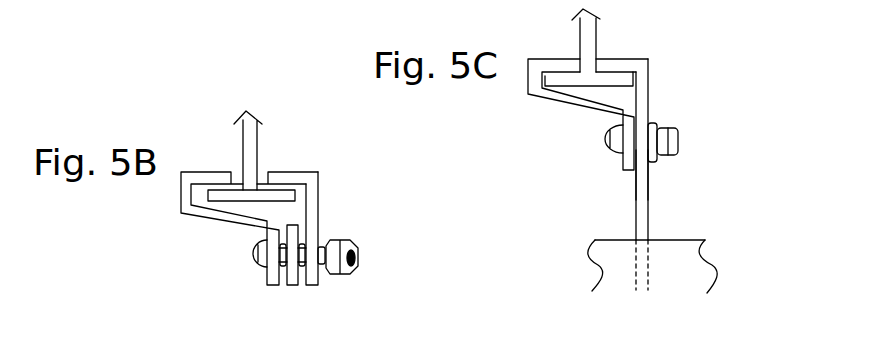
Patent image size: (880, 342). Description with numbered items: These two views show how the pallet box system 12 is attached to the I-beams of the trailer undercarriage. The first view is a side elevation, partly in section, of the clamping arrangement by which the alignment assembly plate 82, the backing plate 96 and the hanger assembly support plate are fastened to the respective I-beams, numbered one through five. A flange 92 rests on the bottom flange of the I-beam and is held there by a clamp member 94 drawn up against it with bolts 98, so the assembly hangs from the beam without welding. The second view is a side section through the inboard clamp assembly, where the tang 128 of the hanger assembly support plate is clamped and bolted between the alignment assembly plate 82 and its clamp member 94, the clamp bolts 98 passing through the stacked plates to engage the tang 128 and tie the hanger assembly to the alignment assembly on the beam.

In FIG. 5B, the clamp member 94 is at (197, 216).
In FIG. 5C, the clamp member 94 is at (565, 103).
In FIG. 5B, the flange 92 is at (296, 178).
In FIG. 5C, the flange 92 is at (645, 63).
In FIG. 5B, the alignment assembly plate 82 is at (319, 207).
In FIG. 5B, the tang 128 is at (294, 276).
In FIG. 5B, the clamp bolts 98 is at (359, 267).
In FIG. 5C, the clamp bolts 98 is at (679, 128).
In FIG. 5C, the backing plate 96 is at (642, 173).
In FIG. 5C, the pallet box system 12 is at (672, 305).